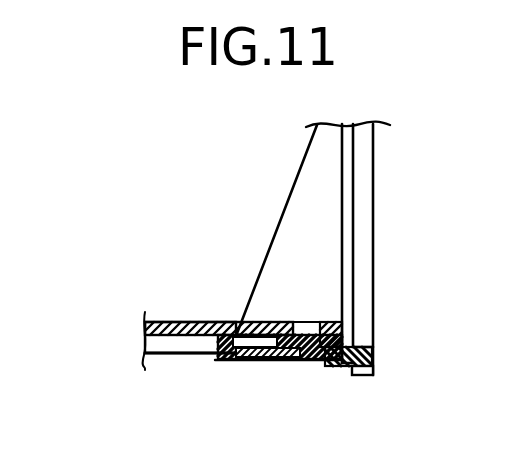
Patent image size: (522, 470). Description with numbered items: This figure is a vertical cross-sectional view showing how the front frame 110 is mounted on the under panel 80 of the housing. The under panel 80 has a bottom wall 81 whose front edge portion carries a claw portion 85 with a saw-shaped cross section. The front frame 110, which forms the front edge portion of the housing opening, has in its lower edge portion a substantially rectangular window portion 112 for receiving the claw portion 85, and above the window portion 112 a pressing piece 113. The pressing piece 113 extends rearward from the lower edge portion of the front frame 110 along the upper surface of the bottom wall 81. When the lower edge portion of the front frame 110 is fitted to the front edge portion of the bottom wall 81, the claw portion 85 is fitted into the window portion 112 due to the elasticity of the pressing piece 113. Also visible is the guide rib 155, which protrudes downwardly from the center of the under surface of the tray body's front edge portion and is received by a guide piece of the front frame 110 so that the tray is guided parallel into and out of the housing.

The under panel 80 is at (150, 328).
The bottom wall 81 is at (173, 322).
The claw portions 85 is at (296, 362).
The front frame 110 is at (368, 192).
The window portions 112 is at (330, 364).
The pressing pieces 113 is at (328, 312).
The guide rib 155 is at (245, 360).